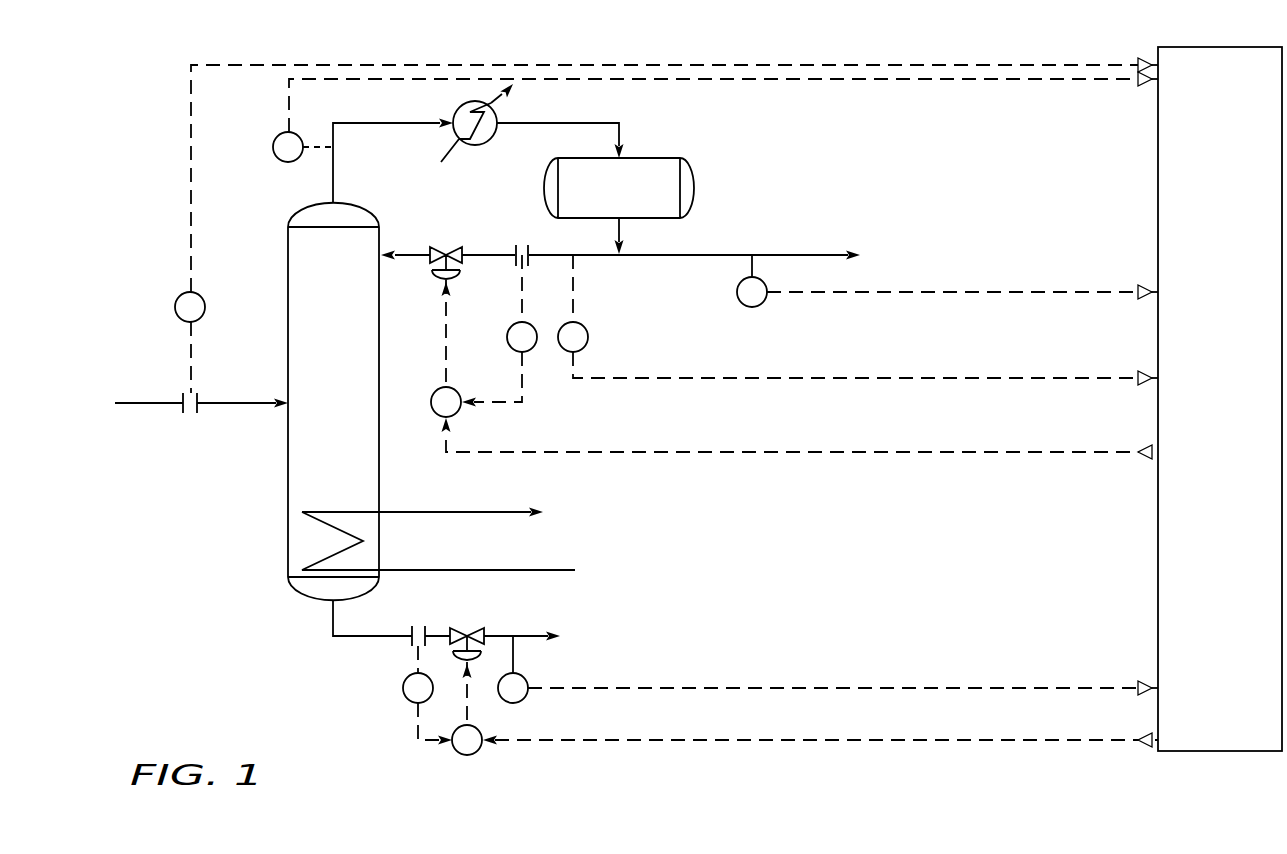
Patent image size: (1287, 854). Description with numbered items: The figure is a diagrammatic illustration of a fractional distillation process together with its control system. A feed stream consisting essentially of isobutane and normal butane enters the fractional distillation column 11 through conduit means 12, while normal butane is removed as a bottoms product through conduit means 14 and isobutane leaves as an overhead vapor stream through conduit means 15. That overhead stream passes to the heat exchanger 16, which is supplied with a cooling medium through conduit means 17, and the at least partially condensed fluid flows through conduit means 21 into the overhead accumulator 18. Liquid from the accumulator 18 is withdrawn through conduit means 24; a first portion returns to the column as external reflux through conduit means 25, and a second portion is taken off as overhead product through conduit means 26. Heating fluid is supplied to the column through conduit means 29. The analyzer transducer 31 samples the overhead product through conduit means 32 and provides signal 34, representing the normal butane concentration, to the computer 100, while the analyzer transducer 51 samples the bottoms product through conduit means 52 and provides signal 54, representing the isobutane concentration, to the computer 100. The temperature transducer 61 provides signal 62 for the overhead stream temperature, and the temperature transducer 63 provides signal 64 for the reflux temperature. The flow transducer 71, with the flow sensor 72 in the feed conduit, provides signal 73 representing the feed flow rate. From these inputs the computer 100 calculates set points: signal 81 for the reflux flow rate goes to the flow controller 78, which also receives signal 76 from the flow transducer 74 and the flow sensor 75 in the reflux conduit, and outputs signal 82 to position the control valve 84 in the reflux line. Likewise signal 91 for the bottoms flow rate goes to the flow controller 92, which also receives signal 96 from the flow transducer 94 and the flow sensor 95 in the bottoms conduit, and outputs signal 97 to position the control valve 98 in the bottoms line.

The fractional distillation column 11 is at (379, 495).
The conduit means 12 is at (151, 402).
The conduit means 14 is at (347, 636).
The conduit means 15 is at (400, 124).
The heat exchanger 16 is at (476, 146).
The conduit means 17 is at (441, 162).
The overhead accumulator 18 is at (650, 158).
The conduit means 21 is at (583, 123).
The conduit means 24 is at (623, 229).
The conduit means 25 is at (641, 256).
The conduit means 26 is at (740, 255).
The conduit means 29 is at (450, 571).
The analyzer transducer 31 is at (737, 292).
The conduit means 32 is at (752, 270).
The output signal 34 is at (897, 293).
The analyzer transducer 51 is at (525, 701).
The conduit means 52 is at (514, 654).
The output signal 54 is at (878, 686).
The temperature transducer 61 is at (273, 148).
The output signal 62 is at (338, 80).
The temperature transducer 63 is at (588, 337).
The output signal 64 is at (751, 378).
The flow transducer 71 is at (205, 307).
The flow sensor 72 is at (197, 414).
The output signal 73 is at (191, 215).
The flow transducer 74 is at (507, 336).
The flow sensor 75 is at (516, 254).
The output signal 76 is at (515, 401).
The flow controller 78 is at (439, 419).
The signal 81 is at (758, 453).
The output signal 82 is at (446, 361).
The control valve 84 is at (441, 283).
The signal 91 is at (738, 741).
The flow controller 92 is at (475, 753).
The flow transducer 94 is at (406, 700).
The flow sensor 95 is at (407, 646).
The output signal 96 is at (410, 741).
The output signal 97 is at (470, 716).
The control valve 98 is at (485, 641).
The computer 100 is at (1282, 305).